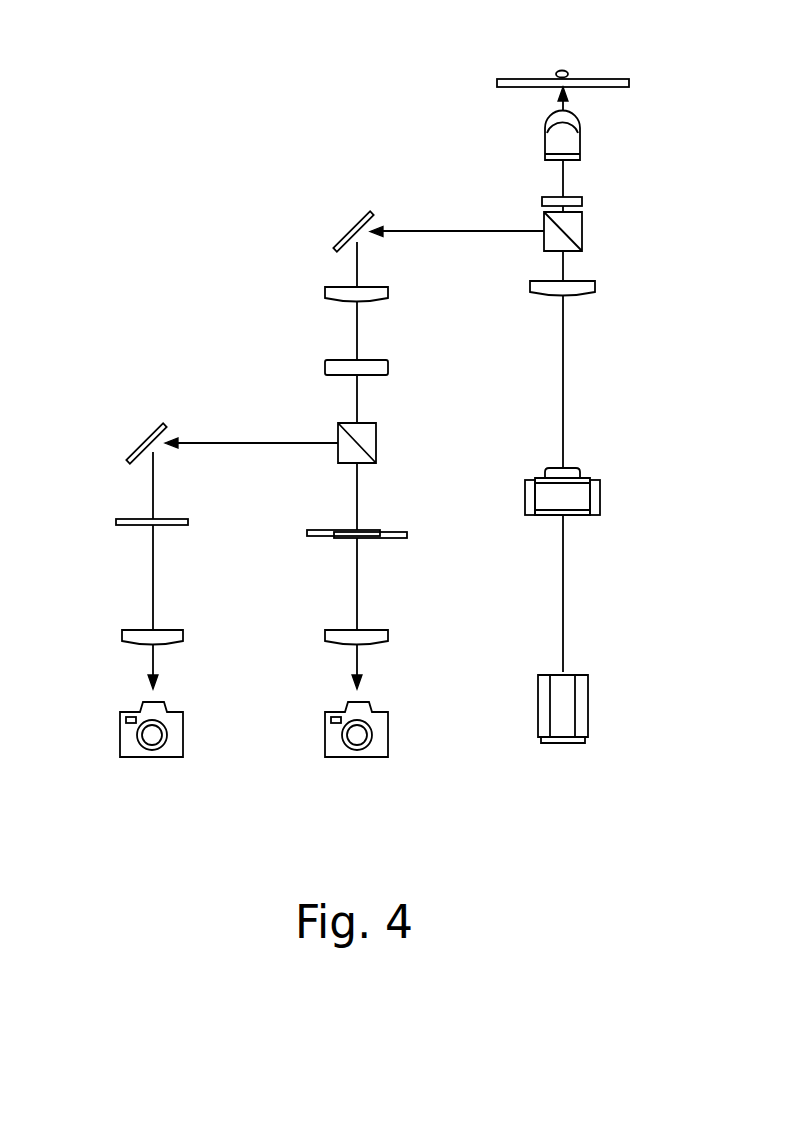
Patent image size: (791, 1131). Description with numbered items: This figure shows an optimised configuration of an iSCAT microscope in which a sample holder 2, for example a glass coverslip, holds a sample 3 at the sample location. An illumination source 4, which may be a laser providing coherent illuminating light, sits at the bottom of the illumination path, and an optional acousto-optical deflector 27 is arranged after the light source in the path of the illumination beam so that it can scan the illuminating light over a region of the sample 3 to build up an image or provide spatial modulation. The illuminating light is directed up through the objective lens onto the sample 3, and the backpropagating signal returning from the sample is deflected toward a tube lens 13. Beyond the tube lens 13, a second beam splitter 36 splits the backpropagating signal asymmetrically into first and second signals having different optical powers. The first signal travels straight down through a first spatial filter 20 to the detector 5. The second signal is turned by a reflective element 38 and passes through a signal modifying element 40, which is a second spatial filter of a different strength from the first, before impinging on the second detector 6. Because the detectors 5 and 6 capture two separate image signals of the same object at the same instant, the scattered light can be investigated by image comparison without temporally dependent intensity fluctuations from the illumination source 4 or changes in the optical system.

The sample holder 2 is at (497, 82).
The sample 3 is at (556, 71).
The illumination source 4 is at (586, 706).
The detector 5 is at (337, 757).
The second detector 6 is at (132, 757).
The tube lens 13 is at (389, 293).
The spatial filter 20 is at (307, 534).
The acousto-optical deflector 27 is at (600, 497).
The second beam splitter 36 is at (338, 432).
The reflective element 38 is at (142, 443).
The signal modifying element 40 is at (116, 525).